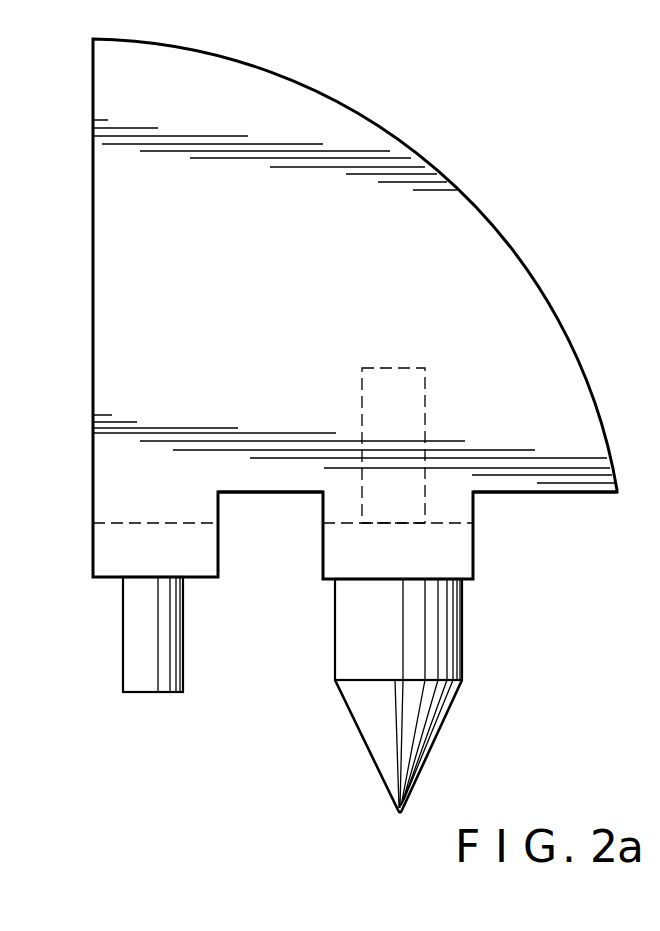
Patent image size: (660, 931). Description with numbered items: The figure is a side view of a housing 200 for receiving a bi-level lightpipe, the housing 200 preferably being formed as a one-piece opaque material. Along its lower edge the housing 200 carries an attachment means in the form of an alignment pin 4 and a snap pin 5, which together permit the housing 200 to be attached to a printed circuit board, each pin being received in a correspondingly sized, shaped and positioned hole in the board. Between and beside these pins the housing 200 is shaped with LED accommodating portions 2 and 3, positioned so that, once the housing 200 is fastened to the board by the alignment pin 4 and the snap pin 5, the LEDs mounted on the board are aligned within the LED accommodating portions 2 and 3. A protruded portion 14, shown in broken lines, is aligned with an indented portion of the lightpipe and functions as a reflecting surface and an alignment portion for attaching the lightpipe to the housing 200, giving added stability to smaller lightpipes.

The housing 200 is at (406, 163).
The protruded portion 14 is at (413, 388).
The LED accommodating portion 2 is at (273, 497).
The LED accommodating portion 3 is at (538, 493).
The alignment pin 4 is at (183, 645).
The snap pin 5 is at (445, 720).